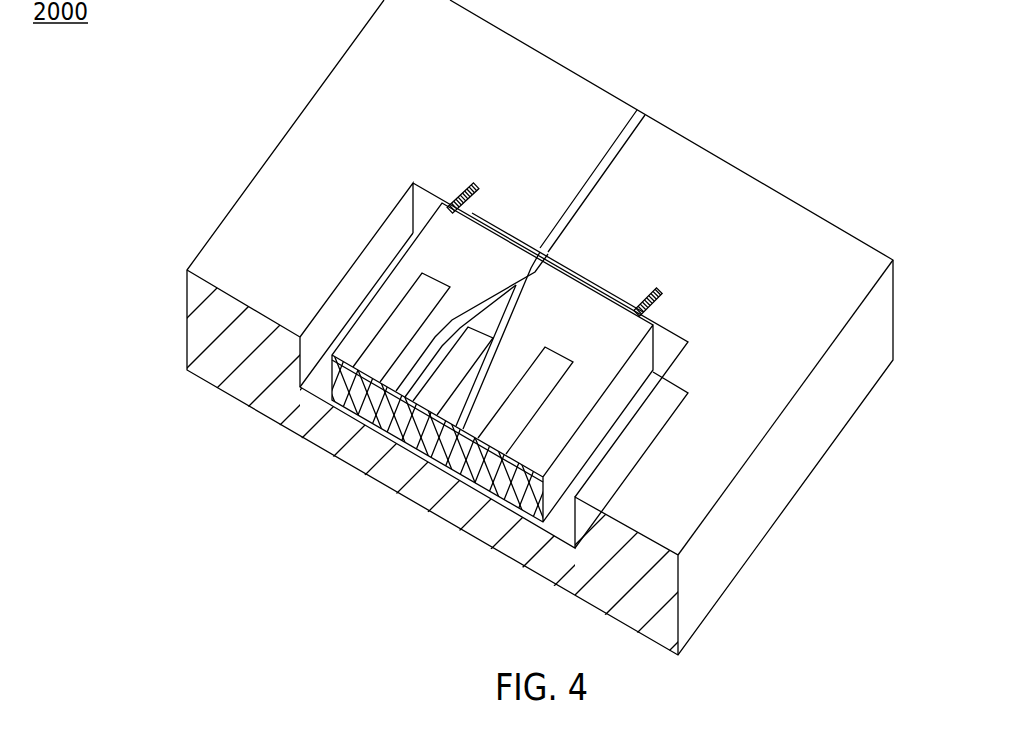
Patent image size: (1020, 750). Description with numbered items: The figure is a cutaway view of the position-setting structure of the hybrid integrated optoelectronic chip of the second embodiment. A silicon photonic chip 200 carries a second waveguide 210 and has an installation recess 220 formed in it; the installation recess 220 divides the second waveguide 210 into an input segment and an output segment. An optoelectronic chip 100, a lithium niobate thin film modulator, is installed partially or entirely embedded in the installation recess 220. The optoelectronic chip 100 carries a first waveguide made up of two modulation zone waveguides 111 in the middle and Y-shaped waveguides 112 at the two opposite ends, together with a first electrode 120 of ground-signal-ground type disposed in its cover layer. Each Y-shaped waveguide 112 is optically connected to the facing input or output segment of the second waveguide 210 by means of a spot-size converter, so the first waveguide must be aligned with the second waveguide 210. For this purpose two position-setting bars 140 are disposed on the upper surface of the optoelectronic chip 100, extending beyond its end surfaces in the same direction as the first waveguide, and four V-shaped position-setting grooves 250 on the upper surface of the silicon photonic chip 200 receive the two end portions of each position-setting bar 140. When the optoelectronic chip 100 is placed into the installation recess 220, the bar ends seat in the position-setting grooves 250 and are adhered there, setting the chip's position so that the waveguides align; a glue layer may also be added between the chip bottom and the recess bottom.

The silicon photonic chip 200 is at (567, 80).
The second waveguide 210 is at (598, 187).
The installation recess 220 is at (320, 378).
The optoelectronic chip 100 is at (630, 300).
The modulation zone waveguide 111 is at (432, 353).
The Y-shaped waveguide 112 is at (472, 305).
The first electrode 120 is at (390, 342).
The position-setting bar 140 is at (607, 370).
The position-setting groove 250 is at (648, 297).